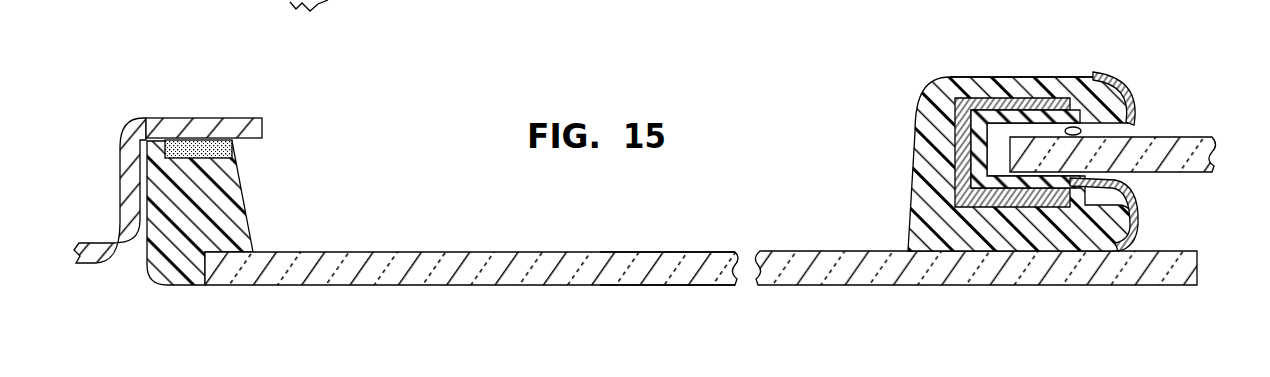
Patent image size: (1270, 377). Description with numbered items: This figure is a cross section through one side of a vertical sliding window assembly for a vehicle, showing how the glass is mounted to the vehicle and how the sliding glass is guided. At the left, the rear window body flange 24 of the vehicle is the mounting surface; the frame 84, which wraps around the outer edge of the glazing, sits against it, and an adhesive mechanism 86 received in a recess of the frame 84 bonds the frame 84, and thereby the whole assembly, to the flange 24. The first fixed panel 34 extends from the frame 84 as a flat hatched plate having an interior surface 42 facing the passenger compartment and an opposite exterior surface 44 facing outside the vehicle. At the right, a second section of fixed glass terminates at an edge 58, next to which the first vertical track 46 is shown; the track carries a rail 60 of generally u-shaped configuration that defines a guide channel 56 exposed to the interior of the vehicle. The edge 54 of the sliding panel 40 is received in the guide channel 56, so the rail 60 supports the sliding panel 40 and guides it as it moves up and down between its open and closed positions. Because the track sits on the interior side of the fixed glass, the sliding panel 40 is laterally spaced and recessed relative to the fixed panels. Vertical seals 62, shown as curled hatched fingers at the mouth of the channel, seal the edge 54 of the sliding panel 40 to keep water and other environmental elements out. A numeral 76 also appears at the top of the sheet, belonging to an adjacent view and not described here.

The flange 24 is at (243, 118).
The first fixed panel 34 is at (532, 276).
The sliding panel 40 is at (1158, 137).
The interior surface 42 is at (676, 251).
The exterior surface 44 is at (676, 287).
The first vertical track 46 is at (983, 83).
The edge 54 is at (1010, 157).
The guide channel 56 is at (1024, 132).
The edge 58 is at (1197, 257).
The rail 60 is at (957, 178).
The vertical seal 62 is at (1123, 92).
The fragment 76 is at (380, 0).
The frame 84 is at (222, 199).
The adhesive mechanism 86 is at (200, 140).